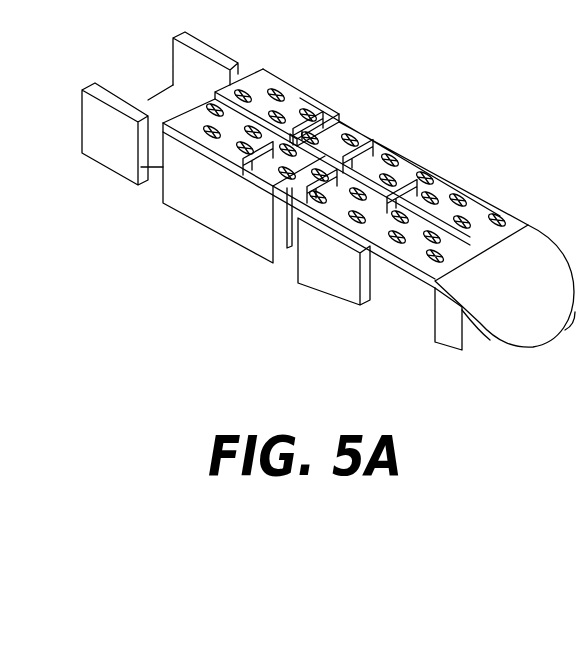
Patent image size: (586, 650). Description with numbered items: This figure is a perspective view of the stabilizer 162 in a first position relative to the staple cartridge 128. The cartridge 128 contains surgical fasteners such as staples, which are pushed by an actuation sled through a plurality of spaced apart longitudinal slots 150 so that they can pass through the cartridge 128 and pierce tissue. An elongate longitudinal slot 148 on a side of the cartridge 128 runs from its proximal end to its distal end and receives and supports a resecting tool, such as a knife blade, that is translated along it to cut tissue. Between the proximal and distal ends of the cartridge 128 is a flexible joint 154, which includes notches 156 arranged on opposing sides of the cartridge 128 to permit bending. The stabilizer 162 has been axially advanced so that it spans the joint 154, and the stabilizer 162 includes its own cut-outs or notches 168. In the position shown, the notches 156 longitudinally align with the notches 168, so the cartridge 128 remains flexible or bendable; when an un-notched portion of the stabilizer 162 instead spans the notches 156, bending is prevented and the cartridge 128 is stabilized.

The cartridge 128 is at (290, 83).
The elongate longitudinal slot 148 is at (362, 125).
The longitudinal slots 150 is at (468, 193).
The flexible joint 154 is at (308, 194).
The notches 156 is at (287, 193).
The stabilizer 162 is at (200, 207).
The notches 168 is at (142, 167).